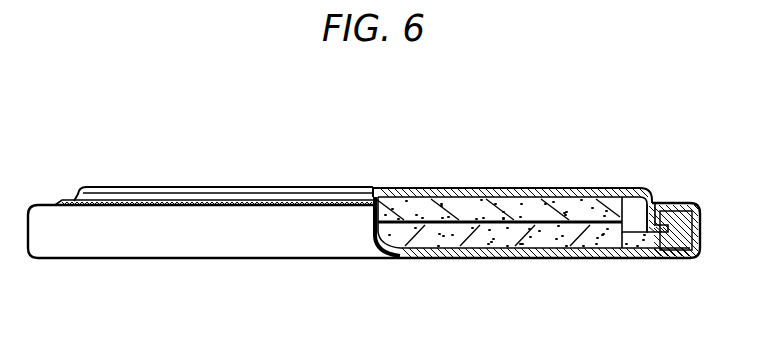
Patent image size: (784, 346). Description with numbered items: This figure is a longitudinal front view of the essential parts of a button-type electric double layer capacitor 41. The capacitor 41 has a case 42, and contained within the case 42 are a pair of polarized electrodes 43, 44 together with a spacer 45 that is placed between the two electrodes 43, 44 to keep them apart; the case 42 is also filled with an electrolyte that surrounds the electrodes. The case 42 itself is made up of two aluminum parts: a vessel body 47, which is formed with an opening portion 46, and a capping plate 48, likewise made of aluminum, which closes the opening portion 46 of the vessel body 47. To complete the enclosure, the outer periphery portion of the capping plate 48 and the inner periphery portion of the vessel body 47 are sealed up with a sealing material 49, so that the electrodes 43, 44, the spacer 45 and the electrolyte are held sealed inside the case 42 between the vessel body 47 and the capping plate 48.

The button-type electric double layer capacitor 41 is at (396, 183).
The case 42 is at (565, 181).
The polarized electrode 43 is at (505, 203).
The polarized electrode 44 is at (476, 237).
The spacer 45 is at (432, 228).
The opening portion 46 is at (659, 203).
The vessel body 47 is at (566, 258).
The capping plate 48 is at (444, 197).
The sealing material 49 is at (678, 247).